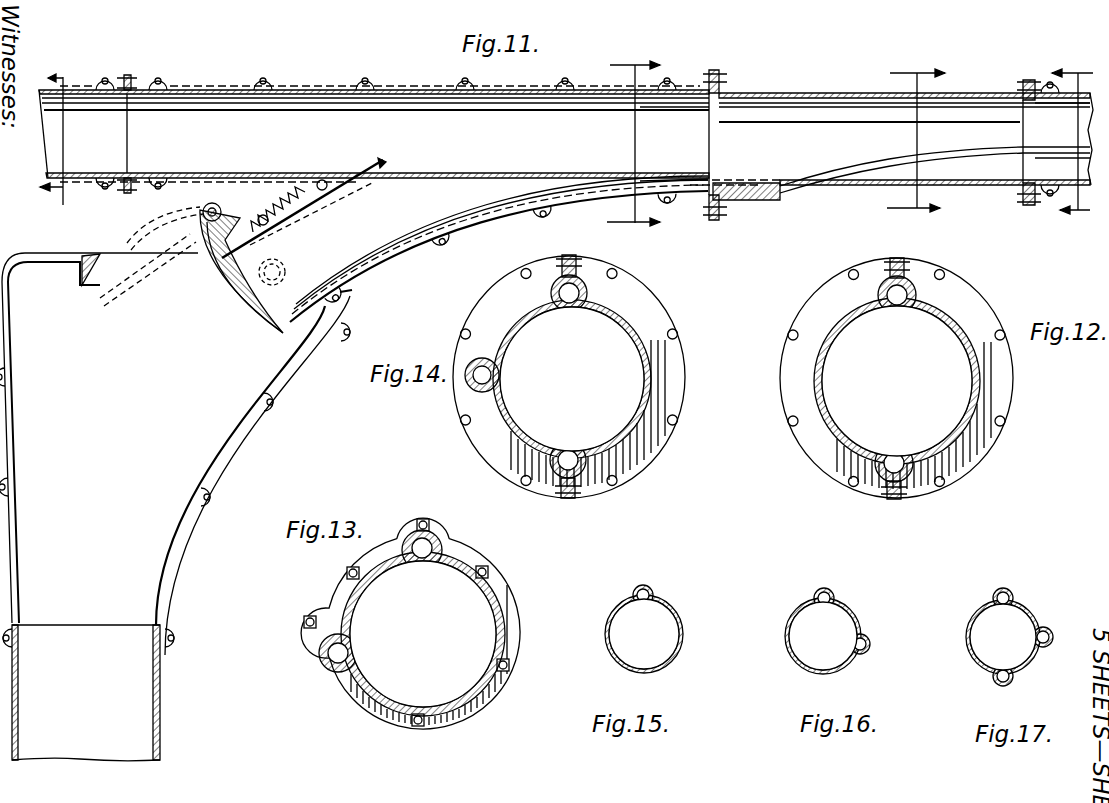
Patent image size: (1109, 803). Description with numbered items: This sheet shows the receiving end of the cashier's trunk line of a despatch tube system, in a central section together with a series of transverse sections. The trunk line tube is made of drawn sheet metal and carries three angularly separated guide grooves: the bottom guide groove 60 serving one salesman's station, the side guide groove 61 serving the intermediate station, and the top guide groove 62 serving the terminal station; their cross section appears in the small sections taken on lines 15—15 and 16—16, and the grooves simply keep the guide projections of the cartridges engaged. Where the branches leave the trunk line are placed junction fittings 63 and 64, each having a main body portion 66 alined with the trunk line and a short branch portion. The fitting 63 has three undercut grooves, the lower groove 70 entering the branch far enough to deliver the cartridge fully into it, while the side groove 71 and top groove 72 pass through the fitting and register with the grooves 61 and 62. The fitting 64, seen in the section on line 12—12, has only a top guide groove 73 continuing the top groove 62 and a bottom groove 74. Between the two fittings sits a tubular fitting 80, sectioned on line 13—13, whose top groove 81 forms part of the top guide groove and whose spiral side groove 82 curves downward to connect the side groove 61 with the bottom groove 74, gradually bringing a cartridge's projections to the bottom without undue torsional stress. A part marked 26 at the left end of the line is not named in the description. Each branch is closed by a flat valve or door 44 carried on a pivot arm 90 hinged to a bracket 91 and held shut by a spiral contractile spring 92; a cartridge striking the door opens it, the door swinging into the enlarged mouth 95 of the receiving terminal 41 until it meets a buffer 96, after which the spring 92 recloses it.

In FIG. 11, the section line 12— 12 is at (633, 146).
In FIG. 11, the section line 13— 13 is at (916, 139).
In FIG. 11, the section line 15— 15 is at (63, 132).
In FIG. 11, the section line 16— 16 is at (1077, 140).
In FIG. 11, the coupling nut 26 is at (82, 88).
In FIG. 11, the receiving terminal 41 is at (160, 688).
In FIG. 11, the valve or door 44 is at (222, 292).
In FIG. 17, the bottom guide groove 60 is at (1010, 680).
In FIG. 11, the side guide groove 61 is at (1063, 155).
In FIG. 16, the side guide groove 61 is at (866, 637).
In FIG. 17, the side guide groove 61 is at (1047, 634).
In FIG. 11, the top guide groove 62 is at (95, 101).
In FIG. 15, the top guide groove 62 is at (649, 594).
In FIG. 16, the top guide groove 62 is at (818, 596).
In FIG. 17, the top guide groove 62 is at (1005, 596).
In FIG. 14, the junction fitting 63 is at (668, 300).
In FIG. 11, the junction fitting 64 is at (398, 86).
In FIG. 12, the junction fitting 64 is at (978, 297).
In FIG. 11, the main body portion 66 is at (215, 120).
In FIG. 14, the lower groove 70 is at (569, 452).
In FIG. 14, the side groove 71 is at (486, 374).
In FIG. 14, the top groove 72 is at (569, 300).
In FIG. 11, the top guide groove 73 is at (690, 108).
In FIG. 12, the top guide groove 73 is at (897, 302).
In FIG. 11, the bottom groove 74 is at (663, 185).
In FIG. 12, the bottom groove 74 is at (895, 455).
In FIG. 11, the tubular fitting 80 is at (793, 93).
In FIG. 13, the tubular fitting 80 is at (505, 582).
In FIG. 11, the top groove 81 is at (830, 103).
In FIG. 13, the top groove 81 is at (421, 556).
In FIG. 11, the spiral side groove 82 is at (960, 148).
In FIG. 13, the spiral side groove 82 is at (344, 662).
In FIG. 11, the pivot arm 90 is at (199, 251).
In FIG. 11, the bracket 91 is at (268, 262).
In FIG. 11, the spiral contractile spring 92 is at (285, 206).
In FIG. 11, the mouth 95 is at (248, 432).
In FIG. 11, the buffer 96 is at (90, 280).